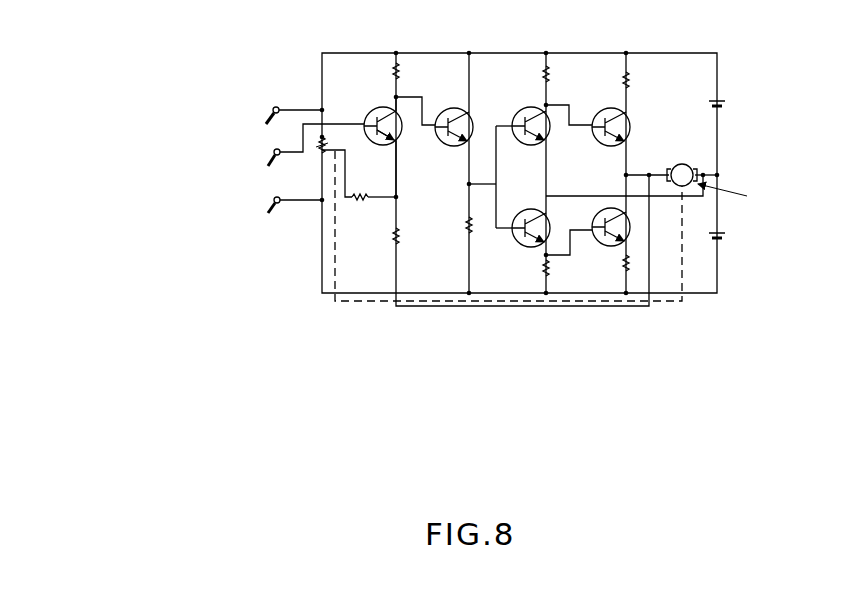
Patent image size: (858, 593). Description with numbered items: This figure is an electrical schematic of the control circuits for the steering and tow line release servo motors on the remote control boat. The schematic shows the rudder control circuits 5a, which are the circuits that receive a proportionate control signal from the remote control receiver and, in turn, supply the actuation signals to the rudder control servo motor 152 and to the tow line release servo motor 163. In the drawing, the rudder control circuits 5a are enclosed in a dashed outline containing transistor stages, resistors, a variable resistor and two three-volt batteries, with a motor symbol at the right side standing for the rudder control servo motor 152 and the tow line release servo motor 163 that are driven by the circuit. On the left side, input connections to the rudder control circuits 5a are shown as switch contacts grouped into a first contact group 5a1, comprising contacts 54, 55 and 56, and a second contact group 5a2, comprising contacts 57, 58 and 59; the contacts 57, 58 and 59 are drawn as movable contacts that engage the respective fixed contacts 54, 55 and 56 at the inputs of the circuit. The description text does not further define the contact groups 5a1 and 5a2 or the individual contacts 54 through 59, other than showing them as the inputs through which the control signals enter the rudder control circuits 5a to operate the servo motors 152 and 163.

The rudder control circuits 5a is at (562, 209).
The first switch contact group 5a1 is at (147, 129).
The second switch contact group 5a2 is at (143, 291).
The switch contact 54 is at (272, 109).
The switch contact 55 is at (273, 151).
The switch contact 56 is at (183, 207).
The switch contact 57 is at (266, 124).
The switch contact 58 is at (268, 166).
The switch contact 59 is at (268, 213).
The rudder control servo motor 152 is at (756, 149).
The tow line release servo motor 163 is at (693, 162).